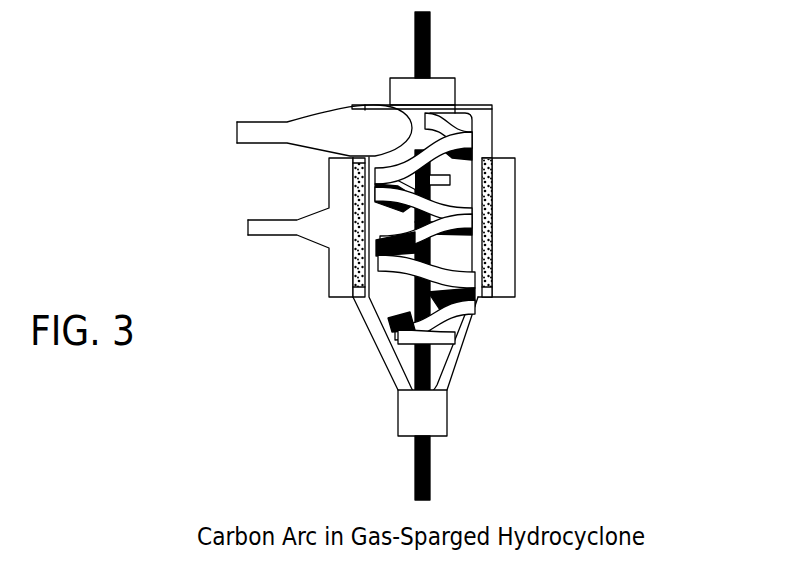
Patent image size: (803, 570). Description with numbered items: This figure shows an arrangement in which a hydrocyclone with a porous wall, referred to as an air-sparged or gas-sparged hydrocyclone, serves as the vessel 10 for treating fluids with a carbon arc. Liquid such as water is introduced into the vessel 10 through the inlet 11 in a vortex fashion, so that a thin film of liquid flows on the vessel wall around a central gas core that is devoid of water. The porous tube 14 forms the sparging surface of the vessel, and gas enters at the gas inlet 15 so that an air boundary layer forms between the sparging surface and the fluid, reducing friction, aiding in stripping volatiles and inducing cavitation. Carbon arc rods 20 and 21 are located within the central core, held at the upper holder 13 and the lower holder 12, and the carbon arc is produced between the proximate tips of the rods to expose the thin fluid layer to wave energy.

The vessel 10 is at (515, 268).
The inlet 11 is at (237, 128).
The bottom electrode holder 12 is at (447, 408).
The top electrode holder 13 is at (456, 88).
The porous tube 14 is at (493, 192).
The gas inlet 15 is at (238, 229).
The carbon arc rod 20 is at (431, 40).
The carbon arc rod 21 is at (431, 475).